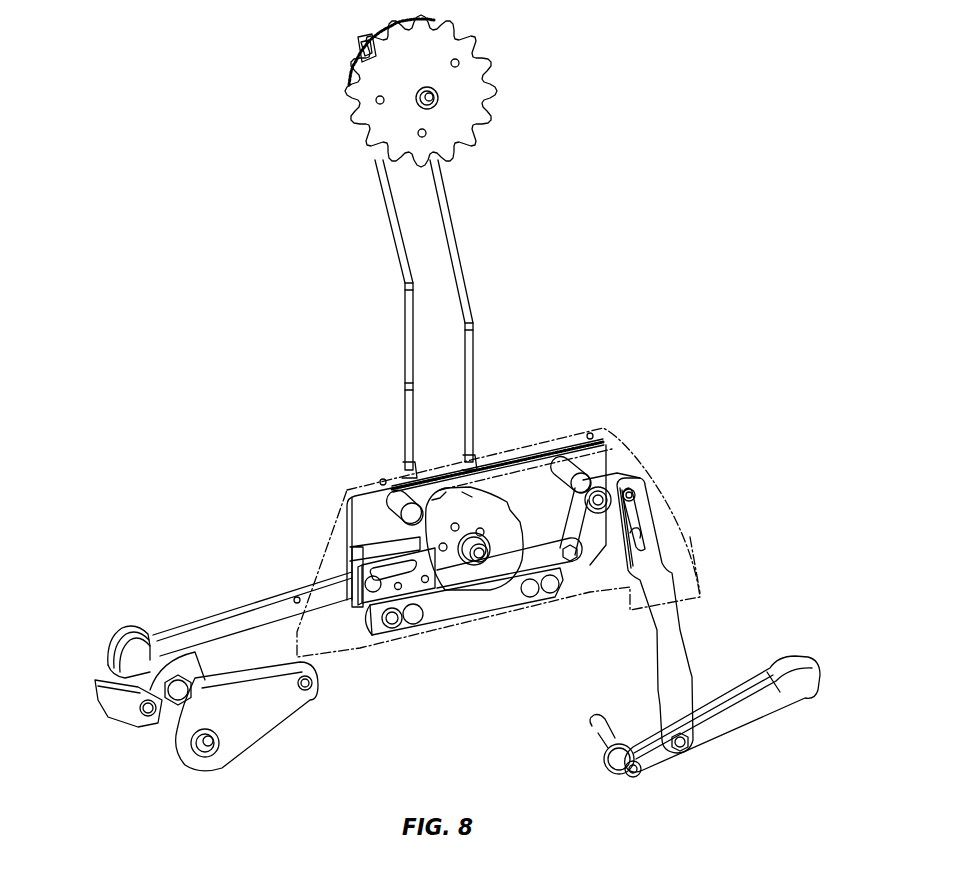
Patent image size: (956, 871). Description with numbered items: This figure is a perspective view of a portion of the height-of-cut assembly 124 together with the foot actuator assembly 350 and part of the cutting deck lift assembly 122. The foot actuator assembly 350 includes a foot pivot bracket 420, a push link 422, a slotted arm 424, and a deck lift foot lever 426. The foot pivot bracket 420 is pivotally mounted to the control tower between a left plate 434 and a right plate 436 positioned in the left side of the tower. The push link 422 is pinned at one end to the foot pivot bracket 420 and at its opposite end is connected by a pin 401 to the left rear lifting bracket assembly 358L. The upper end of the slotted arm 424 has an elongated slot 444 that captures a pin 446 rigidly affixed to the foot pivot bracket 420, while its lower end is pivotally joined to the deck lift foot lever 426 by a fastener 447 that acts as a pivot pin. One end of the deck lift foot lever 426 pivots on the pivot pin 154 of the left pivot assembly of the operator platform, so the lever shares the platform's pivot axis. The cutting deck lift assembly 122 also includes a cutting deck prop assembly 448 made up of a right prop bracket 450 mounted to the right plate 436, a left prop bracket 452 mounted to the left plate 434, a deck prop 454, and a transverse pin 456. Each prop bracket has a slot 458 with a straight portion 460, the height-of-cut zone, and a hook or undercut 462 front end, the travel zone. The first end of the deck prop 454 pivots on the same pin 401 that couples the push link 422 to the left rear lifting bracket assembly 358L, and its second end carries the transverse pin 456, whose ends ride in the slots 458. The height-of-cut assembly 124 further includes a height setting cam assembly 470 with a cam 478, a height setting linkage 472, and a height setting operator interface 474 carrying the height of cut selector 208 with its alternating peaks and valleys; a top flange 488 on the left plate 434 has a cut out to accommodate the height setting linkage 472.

The height setting operator interface 474 is at (512, 78).
The height of cut selector 208 is at (385, 73).
The height-of-cut assembly 124 is at (588, 180).
The height setting linkage 472 is at (484, 297).
The top flange 488 is at (597, 427).
The right prop bracket 450 is at (352, 530).
The slot 458 is at (398, 572).
The transverse pin 456 is at (373, 637).
The cam 478 is at (555, 585).
The hook or undercut front end 462 is at (392, 628).
The straight portion 460 is at (415, 625).
The left prop bracket 452 is at (433, 560).
The height setting cam assembly 470 is at (497, 563).
The push link 422 is at (538, 548).
The right plate 436 is at (600, 478).
The foot pivot bracket 420 is at (605, 488).
The slotted arm 424 is at (670, 642).
The pin 446 is at (633, 495).
The elongated slot 444 is at (640, 533).
The left plate 434 is at (700, 557).
The foot actuator assembly 350 is at (779, 646).
The deck lift foot lever 426 is at (745, 710).
The pivot pin 154 is at (634, 779).
The fastener 447 is at (682, 750).
The cutting deck prop assembly 448 is at (291, 590).
The deck prop 454 is at (238, 605).
The cutting deck lift assembly 122 is at (112, 626).
The left rear lifting bracket assembly 358L is at (117, 744).
The pin 401 is at (175, 725).